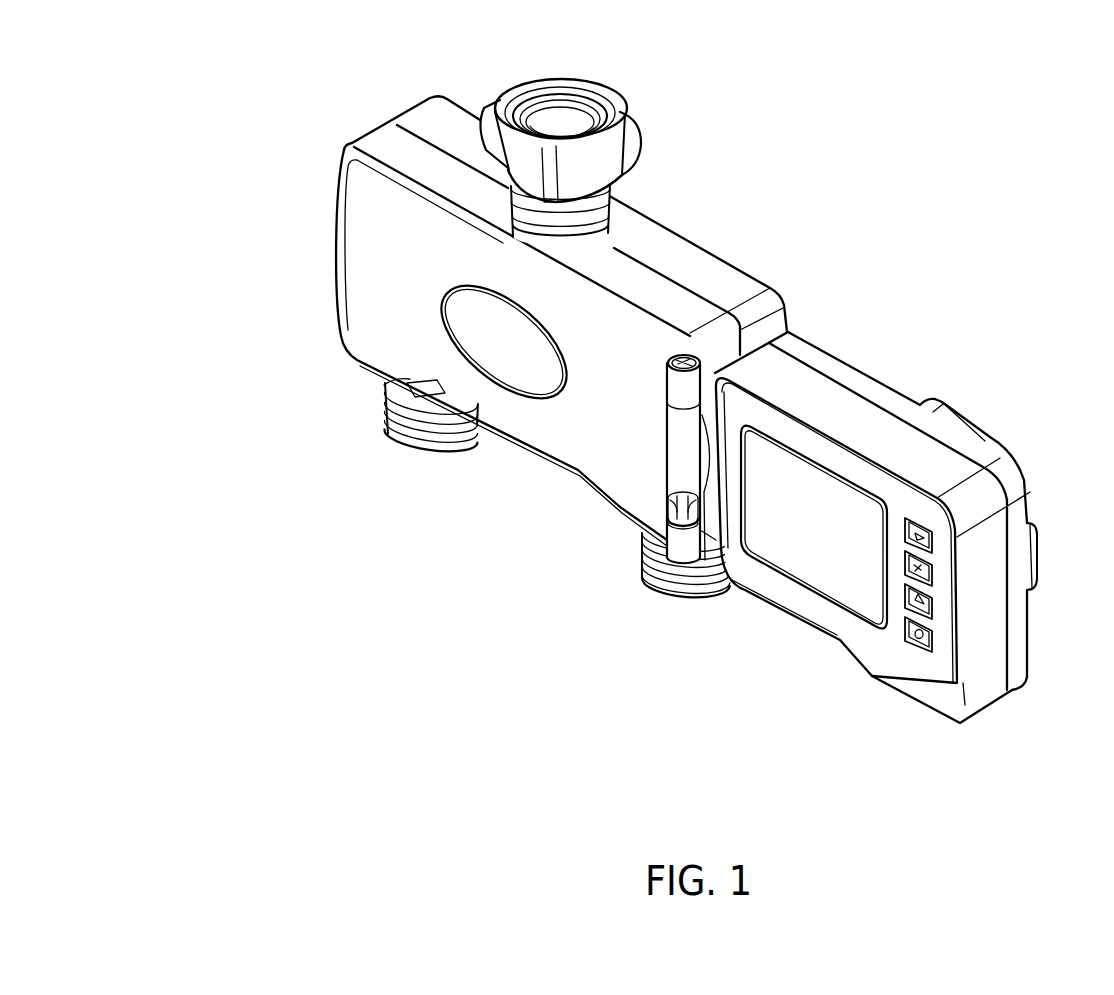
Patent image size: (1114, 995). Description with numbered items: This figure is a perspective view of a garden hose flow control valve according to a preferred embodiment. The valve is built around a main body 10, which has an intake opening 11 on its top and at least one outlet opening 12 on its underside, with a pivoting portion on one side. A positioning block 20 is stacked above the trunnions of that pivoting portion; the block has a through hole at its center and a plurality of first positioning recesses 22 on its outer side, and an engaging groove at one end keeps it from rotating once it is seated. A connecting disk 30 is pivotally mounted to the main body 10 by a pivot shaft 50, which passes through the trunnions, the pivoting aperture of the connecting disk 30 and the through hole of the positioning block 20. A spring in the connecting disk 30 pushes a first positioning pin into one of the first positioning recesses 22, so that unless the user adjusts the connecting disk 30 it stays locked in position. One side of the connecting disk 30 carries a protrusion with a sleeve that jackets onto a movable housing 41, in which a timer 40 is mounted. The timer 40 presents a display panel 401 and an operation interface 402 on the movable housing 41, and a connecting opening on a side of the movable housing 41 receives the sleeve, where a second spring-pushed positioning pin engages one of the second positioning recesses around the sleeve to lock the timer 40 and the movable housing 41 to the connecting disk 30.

The main body 10 is at (322, 242).
The intake opening 11 is at (584, 97).
The outlet opening 12 is at (430, 448).
The positioning block 20 is at (653, 496).
The first positioning recesses 22 is at (708, 508).
The connecting disk 30 is at (660, 440).
The timer 40 is at (893, 365).
The display panel 401 is at (803, 484).
The operation interface 402 is at (933, 582).
The movable housing 41 is at (1018, 607).
The pivot shaft 50 is at (668, 345).